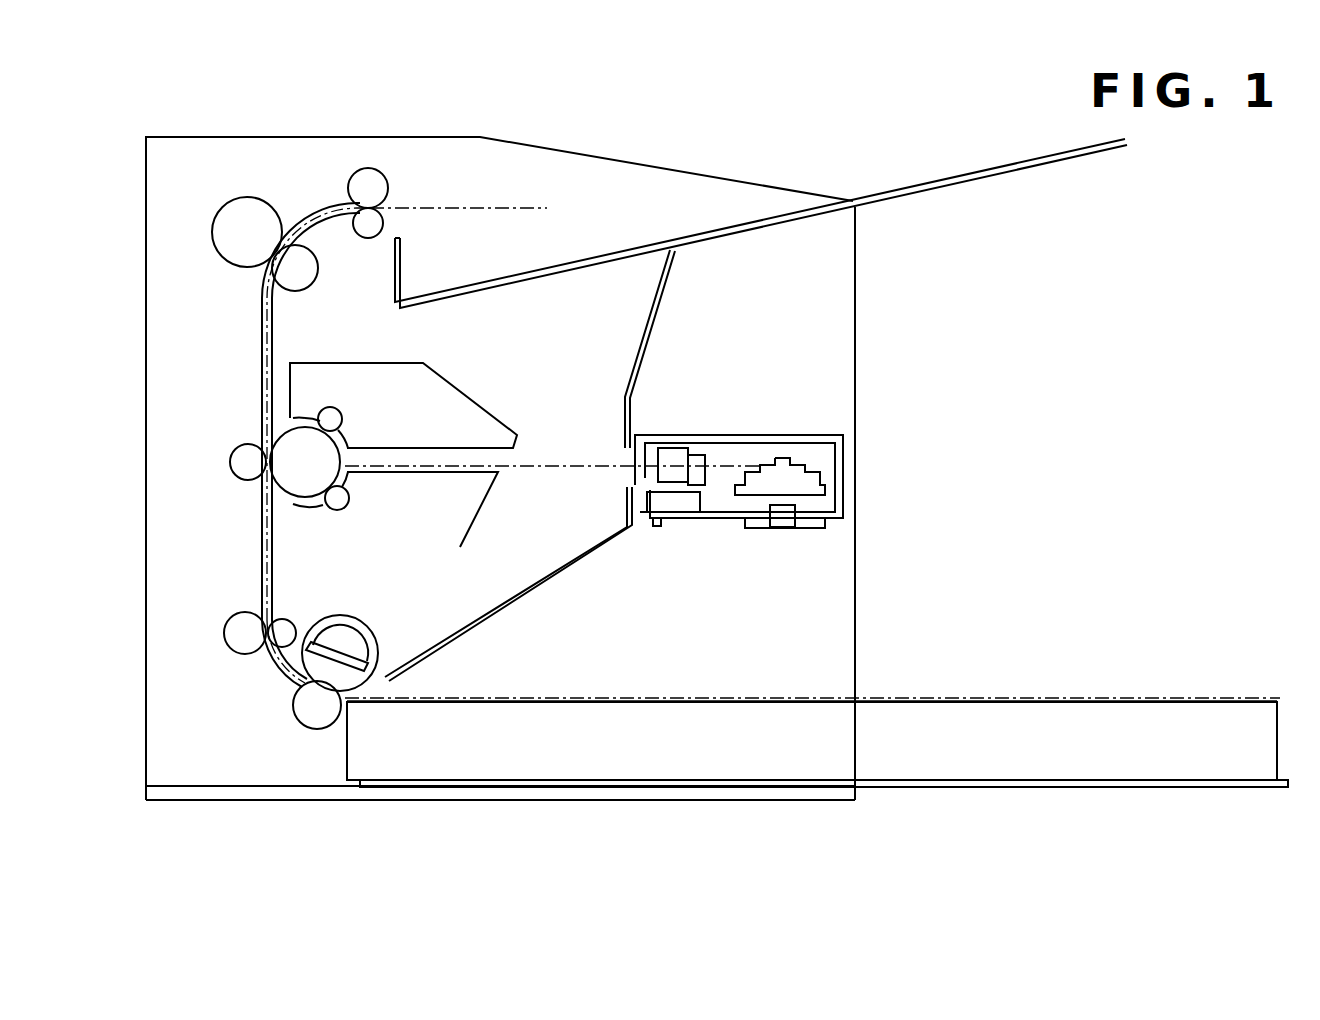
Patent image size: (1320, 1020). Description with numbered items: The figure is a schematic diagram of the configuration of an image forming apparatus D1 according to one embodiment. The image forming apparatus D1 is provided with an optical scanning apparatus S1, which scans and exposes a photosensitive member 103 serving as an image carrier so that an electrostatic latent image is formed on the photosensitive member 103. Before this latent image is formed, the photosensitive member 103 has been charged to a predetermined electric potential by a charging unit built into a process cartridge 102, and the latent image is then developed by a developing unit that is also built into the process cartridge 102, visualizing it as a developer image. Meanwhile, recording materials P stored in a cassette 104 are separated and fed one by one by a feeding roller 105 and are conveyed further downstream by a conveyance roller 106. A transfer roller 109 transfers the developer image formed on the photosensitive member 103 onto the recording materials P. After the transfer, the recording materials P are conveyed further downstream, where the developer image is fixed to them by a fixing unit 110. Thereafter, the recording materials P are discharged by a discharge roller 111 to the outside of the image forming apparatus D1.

The image forming apparatus D1 is at (168, 163).
The fixing unit 110 is at (242, 196).
The discharge roller 111 is at (389, 189).
The process cartridge 102 is at (456, 383).
The photosensitive member 103 is at (268, 418).
The transfer roller 109 is at (228, 460).
The conveyance roller 106 is at (229, 616).
The feeding roller 105 is at (352, 658).
The optical scanning apparatus S1 is at (817, 457).
The cassette 104 is at (988, 790).
The recording materials P is at (1001, 700).